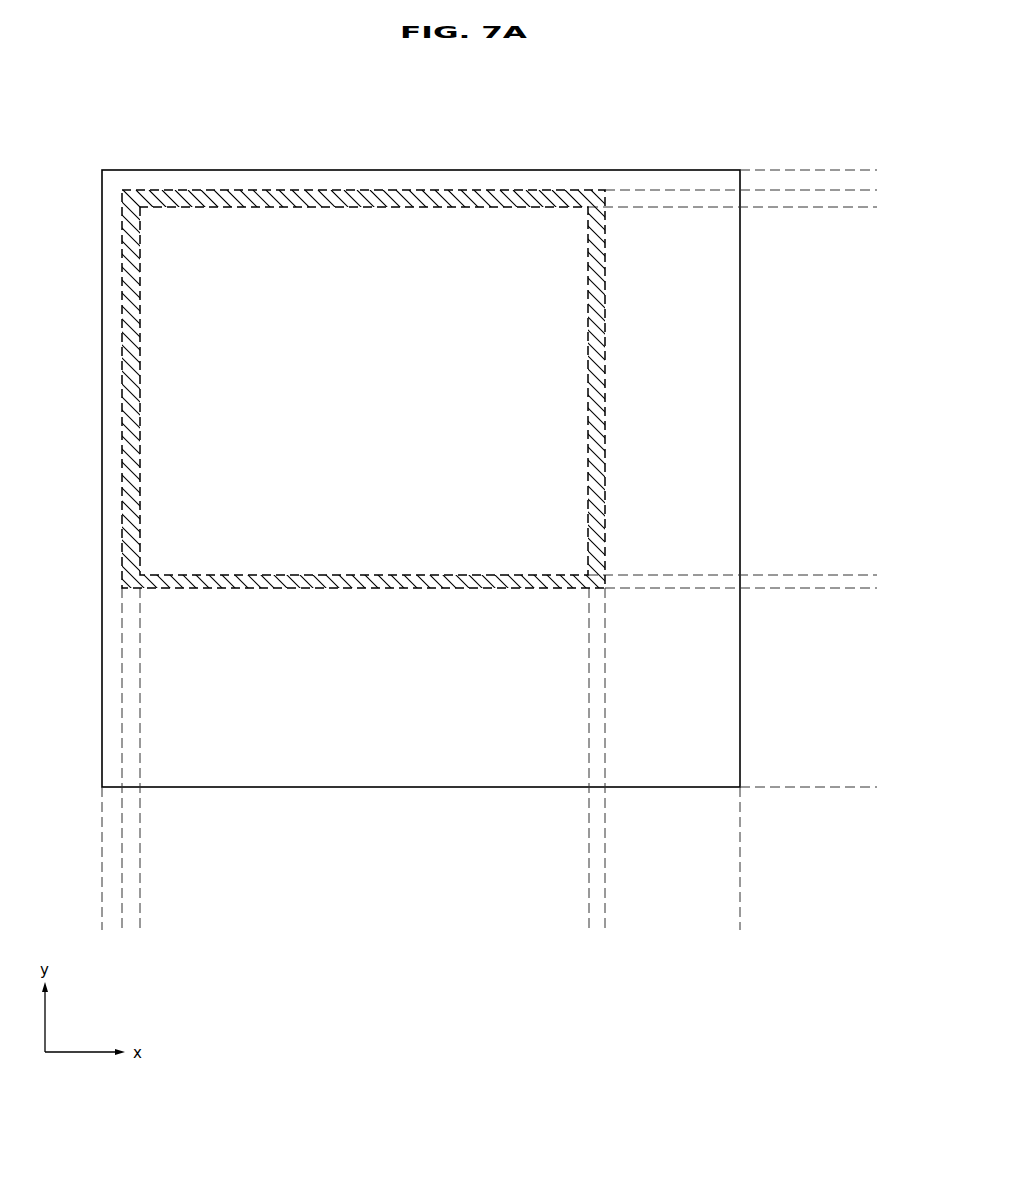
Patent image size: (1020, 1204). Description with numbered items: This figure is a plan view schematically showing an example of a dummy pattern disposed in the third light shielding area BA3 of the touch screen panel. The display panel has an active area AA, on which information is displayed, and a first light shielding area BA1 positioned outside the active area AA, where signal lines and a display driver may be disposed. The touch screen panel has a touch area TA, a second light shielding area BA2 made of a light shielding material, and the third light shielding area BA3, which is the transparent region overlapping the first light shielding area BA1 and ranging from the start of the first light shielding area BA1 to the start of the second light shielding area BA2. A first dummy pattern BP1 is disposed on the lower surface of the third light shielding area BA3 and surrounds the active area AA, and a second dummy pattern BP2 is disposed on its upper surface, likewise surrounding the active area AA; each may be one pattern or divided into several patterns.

The first dummy pattern BP1 is at (551, 200).
The second dummy pattern BP2 is at (363, 358).
The first light shielding area BA1 is at (860, 787).
The second light shielding area BA2 is at (811, 787).
The third light shielding area BA3 is at (83, 828).
The touch area TA is at (584, 634).
The active area AA is at (610, 659).